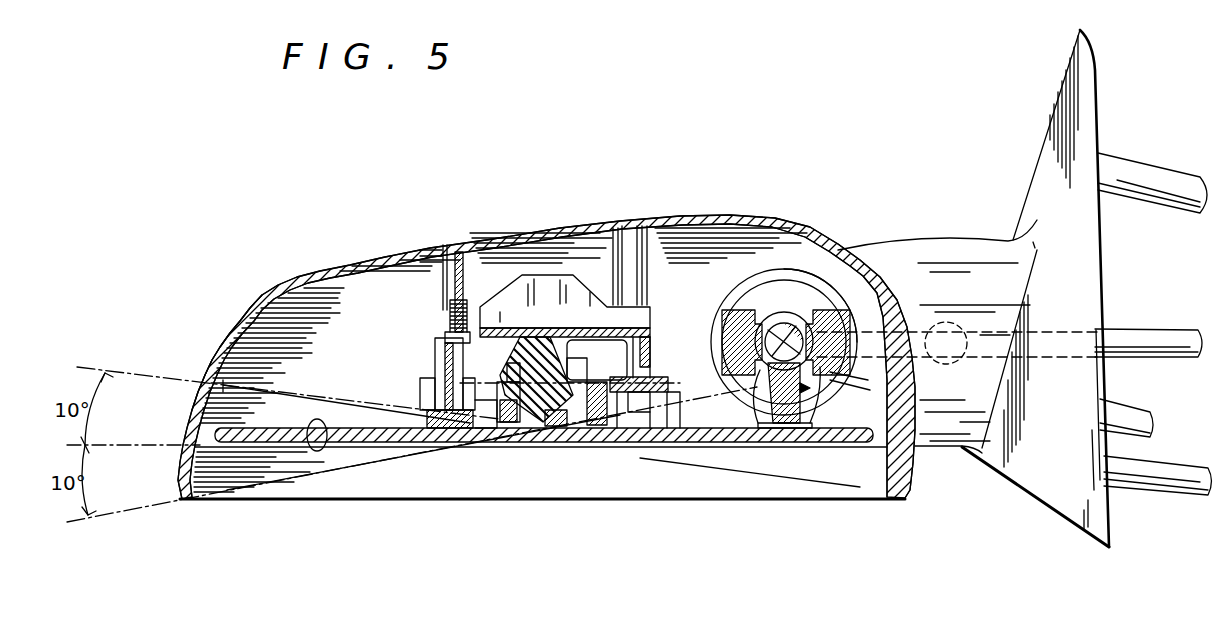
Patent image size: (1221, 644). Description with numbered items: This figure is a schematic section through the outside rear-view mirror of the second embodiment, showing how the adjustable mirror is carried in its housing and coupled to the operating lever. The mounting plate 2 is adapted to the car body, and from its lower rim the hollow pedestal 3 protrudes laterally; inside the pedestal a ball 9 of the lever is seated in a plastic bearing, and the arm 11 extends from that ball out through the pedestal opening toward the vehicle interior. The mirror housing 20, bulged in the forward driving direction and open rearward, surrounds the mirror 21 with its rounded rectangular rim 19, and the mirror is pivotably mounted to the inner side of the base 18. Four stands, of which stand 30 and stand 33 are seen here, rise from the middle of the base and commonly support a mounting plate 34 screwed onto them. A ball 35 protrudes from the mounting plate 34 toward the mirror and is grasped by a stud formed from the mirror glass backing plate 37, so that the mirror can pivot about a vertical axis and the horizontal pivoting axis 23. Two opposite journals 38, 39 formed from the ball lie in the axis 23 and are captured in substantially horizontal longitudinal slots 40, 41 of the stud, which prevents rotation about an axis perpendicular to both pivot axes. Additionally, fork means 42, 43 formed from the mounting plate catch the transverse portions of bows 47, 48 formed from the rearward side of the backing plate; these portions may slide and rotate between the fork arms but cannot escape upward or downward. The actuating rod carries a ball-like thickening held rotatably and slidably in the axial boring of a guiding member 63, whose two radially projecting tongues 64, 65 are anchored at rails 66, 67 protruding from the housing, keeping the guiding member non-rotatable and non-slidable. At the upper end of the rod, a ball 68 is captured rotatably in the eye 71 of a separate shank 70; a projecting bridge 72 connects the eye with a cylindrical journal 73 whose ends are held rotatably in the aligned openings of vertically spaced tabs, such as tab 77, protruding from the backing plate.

The mounting plate 2 is at (1034, 185).
The hollow pedestal 3 is at (955, 240).
The ball 9 is at (950, 322).
The arm 11 is at (1152, 328).
The base 18 is at (372, 262).
The rim 19 is at (905, 497).
The mirror housing 20 is at (252, 303).
The mirror 21 is at (537, 447).
The horizontal pivoting axis 23 is at (678, 380).
The stand 30 is at (443, 285).
The stand 33 is at (648, 232).
The mounting plate 34 is at (527, 327).
The ball 35 is at (557, 410).
The mirror glass backing plate 37 is at (320, 450).
The journal 38 is at (512, 378).
The journal 39 is at (585, 390).
The longitudinal slot 40 is at (493, 417).
The longitudinal slot 41 is at (593, 407).
The fork means 42 is at (428, 362).
The fork means 43 is at (658, 357).
The bow 47 is at (657, 420).
The bow 48 is at (410, 417).
The guiding member 63 is at (775, 297).
The tongue 64 is at (737, 333).
The tongue 65 is at (828, 320).
The rail 66 is at (850, 310).
The rail 67 is at (713, 337).
The ball 68 is at (770, 333).
The shank 70 is at (813, 393).
The eye 71 is at (757, 428).
The bridge 72 is at (817, 383).
The cylindrical journal 73 is at (785, 428).
The tab 77 is at (805, 428).